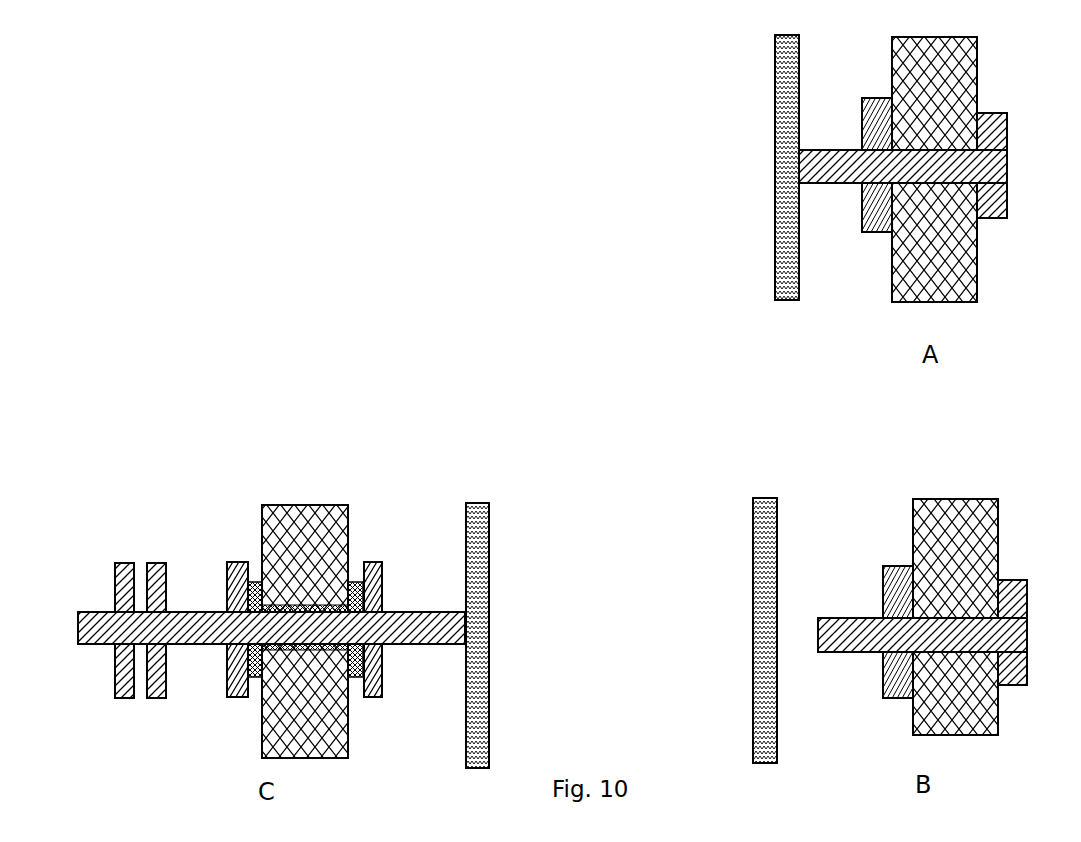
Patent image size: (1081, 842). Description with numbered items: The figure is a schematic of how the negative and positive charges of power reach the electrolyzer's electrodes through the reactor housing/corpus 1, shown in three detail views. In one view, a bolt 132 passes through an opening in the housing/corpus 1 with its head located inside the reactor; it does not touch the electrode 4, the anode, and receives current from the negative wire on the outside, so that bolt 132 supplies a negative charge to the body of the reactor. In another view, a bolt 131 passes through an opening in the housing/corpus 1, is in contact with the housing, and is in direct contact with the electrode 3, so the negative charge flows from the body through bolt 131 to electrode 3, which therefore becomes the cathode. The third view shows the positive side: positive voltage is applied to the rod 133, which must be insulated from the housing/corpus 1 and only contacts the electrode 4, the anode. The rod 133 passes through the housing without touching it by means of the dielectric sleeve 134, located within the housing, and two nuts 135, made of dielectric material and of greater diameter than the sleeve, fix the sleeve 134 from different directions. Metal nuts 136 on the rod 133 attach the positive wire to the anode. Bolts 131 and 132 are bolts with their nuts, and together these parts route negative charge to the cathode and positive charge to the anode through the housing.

The reactor housing/corpus 1 is at (940, 63).
The electrode (cathode) 3 is at (775, 125).
The electrode (anode) 4 is at (753, 525).
The bolt with nut 131 is at (822, 183).
The bolt with nut 132 is at (825, 653).
The rod 133 is at (105, 645).
The dielectric sleeve 134 is at (357, 670).
The nuts (dielectric) 135 is at (862, 108).
The metal nuts 136 is at (148, 563).